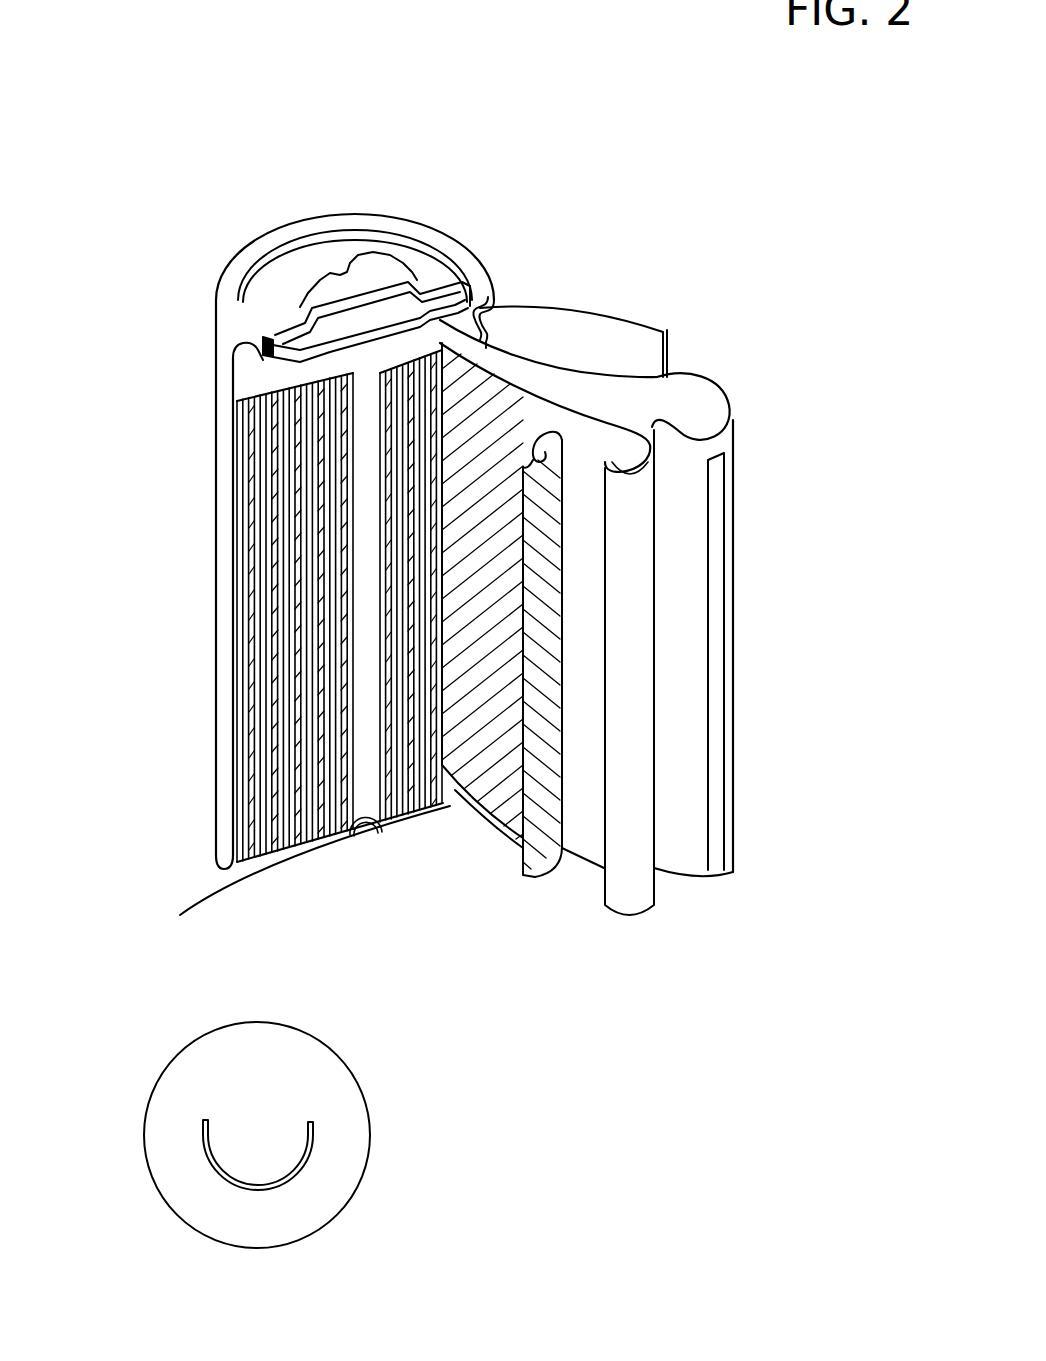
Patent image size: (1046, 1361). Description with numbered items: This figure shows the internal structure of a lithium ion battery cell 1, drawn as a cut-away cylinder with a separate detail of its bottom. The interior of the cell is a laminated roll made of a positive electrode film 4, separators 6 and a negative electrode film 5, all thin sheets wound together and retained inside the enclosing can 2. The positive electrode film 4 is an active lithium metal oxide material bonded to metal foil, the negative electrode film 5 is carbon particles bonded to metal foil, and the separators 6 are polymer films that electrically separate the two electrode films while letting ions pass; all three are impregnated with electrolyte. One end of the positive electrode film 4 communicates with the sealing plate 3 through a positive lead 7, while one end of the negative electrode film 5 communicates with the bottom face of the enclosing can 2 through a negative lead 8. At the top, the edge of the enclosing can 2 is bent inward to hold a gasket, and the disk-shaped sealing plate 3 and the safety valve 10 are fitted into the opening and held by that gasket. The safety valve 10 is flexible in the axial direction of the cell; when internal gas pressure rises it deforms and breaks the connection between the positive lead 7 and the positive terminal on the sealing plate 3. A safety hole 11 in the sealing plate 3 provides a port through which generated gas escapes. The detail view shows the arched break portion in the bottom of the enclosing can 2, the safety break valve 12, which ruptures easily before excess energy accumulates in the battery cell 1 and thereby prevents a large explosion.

The lithium ion battery cell 1 is at (437, 1008).
The enclosing can 2 is at (218, 632).
The sealing plate 3 is at (380, 240).
The positive electrode film 4 is at (538, 868).
The negative electrode film 5 is at (738, 472).
The separators 6 is at (613, 418).
The positive lead 7 is at (462, 345).
The negative lead 8 is at (722, 550).
The safety valve 10 is at (410, 300).
The safety hole 11 is at (345, 265).
The safety break valve 12 is at (205, 1120).